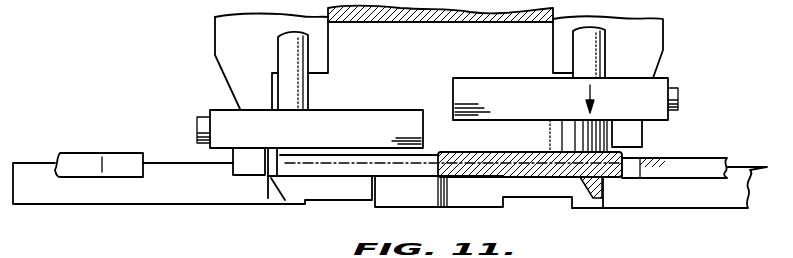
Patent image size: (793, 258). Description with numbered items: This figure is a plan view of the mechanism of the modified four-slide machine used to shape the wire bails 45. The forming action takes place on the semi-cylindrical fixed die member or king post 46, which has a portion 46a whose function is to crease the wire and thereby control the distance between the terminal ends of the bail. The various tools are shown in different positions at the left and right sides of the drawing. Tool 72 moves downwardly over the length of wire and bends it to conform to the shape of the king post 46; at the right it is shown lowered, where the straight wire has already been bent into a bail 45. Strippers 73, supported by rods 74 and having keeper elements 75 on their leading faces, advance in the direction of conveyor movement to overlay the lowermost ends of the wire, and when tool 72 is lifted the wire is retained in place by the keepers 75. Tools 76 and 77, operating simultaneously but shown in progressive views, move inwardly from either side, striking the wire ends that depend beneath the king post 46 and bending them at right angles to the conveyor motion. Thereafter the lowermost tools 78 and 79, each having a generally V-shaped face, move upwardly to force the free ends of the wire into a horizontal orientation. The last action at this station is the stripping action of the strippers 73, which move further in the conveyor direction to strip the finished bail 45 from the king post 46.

The wire bail 45 is at (350, 176).
The king post 46 is at (429, 65).
The king post portion 46a is at (458, 200).
The tool 72 is at (582, 182).
The stripper 73 is at (380, 139).
The rod 74 is at (278, 52).
The keeper element 75 is at (237, 166).
The tool 76 is at (700, 160).
The tool 77 is at (122, 158).
The lowermost tool 78 is at (657, 202).
The lowermost tool 79 is at (284, 200).